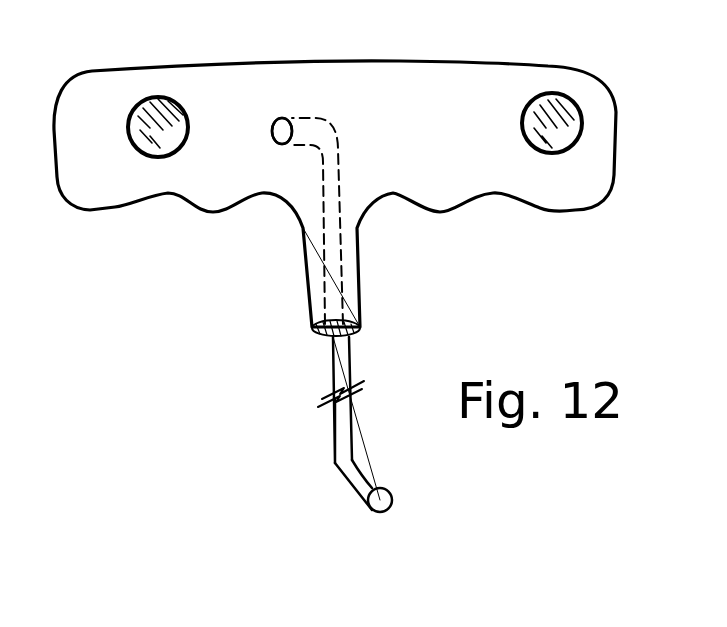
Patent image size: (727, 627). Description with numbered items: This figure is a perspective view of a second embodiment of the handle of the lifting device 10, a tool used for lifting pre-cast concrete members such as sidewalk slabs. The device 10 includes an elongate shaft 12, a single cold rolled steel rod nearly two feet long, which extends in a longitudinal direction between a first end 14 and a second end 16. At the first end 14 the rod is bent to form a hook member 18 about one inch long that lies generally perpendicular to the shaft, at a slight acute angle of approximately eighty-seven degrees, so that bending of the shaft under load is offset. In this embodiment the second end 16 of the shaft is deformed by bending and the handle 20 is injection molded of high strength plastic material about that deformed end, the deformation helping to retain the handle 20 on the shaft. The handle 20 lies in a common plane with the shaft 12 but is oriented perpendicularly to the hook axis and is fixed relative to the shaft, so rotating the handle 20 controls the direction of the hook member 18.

The lifting device 10 is at (236, 309).
The elongate shaft 12 is at (334, 352).
The first end 14 is at (336, 463).
The second end 16 is at (322, 134).
The hook member 18 is at (370, 490).
The handle 20 is at (466, 97).